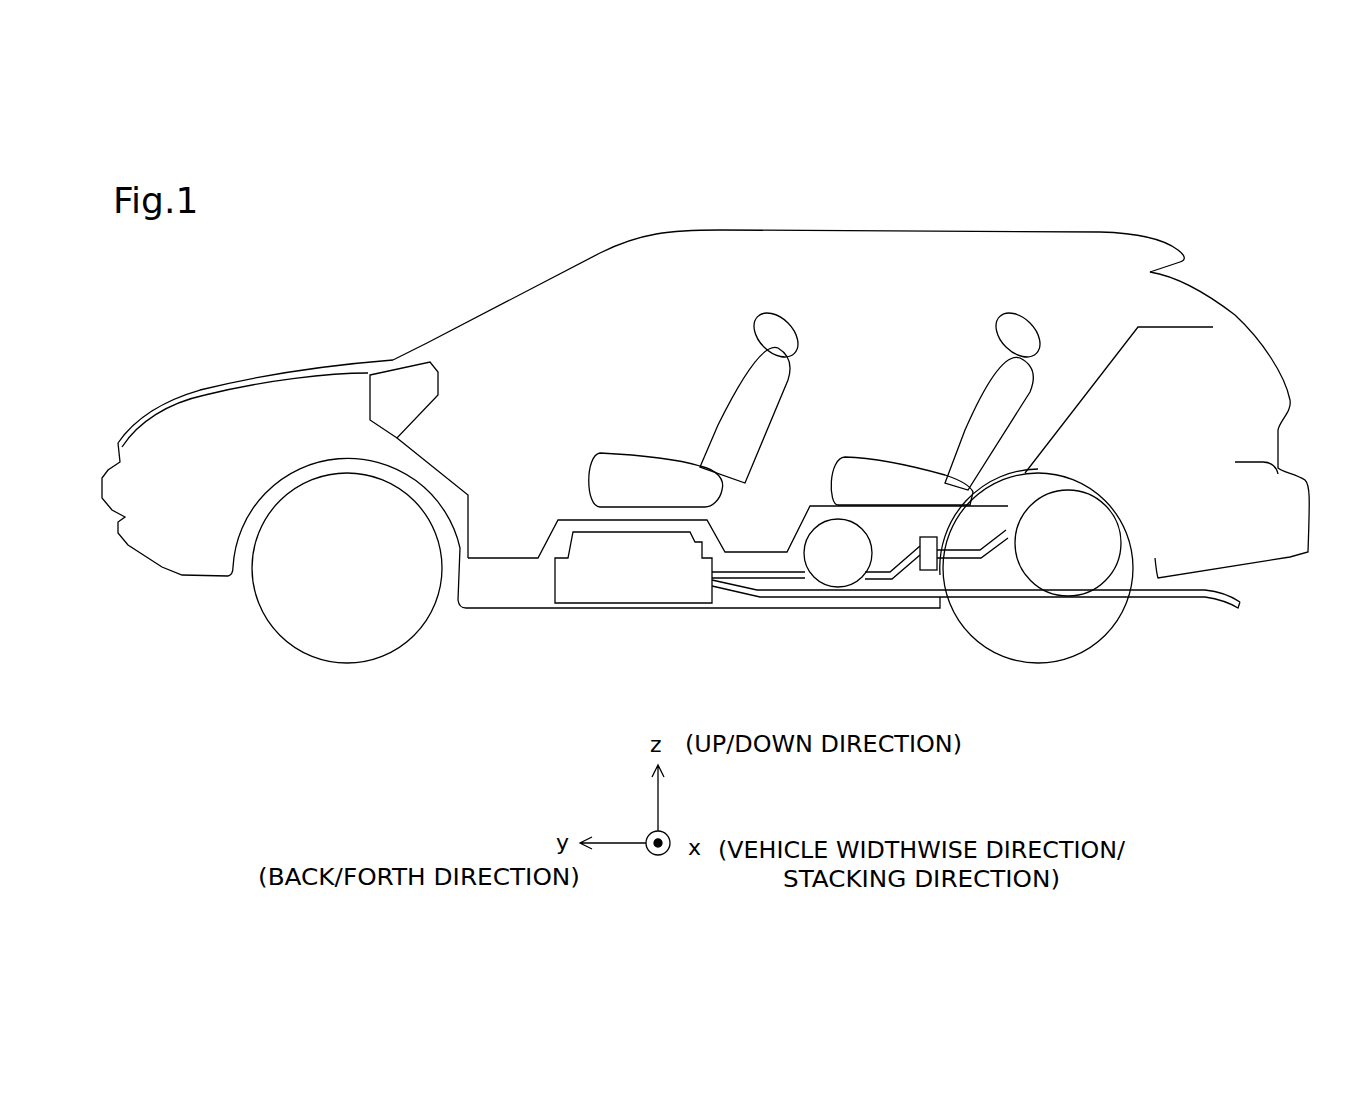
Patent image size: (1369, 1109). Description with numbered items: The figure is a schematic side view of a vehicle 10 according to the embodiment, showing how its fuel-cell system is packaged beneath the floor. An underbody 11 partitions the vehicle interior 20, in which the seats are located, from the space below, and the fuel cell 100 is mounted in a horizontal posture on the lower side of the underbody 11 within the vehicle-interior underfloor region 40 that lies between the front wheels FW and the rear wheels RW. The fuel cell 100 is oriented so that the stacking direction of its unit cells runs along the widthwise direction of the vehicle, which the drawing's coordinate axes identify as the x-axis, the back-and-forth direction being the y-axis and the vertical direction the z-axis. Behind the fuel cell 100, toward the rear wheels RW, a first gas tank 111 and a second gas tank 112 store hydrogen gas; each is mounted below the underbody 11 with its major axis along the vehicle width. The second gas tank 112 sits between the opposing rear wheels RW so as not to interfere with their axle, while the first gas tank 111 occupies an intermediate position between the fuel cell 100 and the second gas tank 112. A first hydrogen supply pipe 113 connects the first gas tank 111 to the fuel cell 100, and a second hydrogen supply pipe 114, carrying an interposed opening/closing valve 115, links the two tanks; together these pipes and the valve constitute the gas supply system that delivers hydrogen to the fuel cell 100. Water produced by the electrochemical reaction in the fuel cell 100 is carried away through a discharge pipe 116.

The vehicle 10 is at (1142, 203).
The underbody 11 is at (767, 547).
The vehicle interior 20 is at (868, 308).
The vehicle-interior underfloor region 40 is at (975, 611).
The fuel cell 100 is at (636, 588).
The first gas tank 111 is at (840, 570).
The second gas tank 112 is at (1088, 567).
The first hydrogen supply pipe 113 is at (745, 577).
The second hydrogen supply pipe 114 is at (893, 580).
The opening/closing valve 115 is at (930, 573).
The discharge pipe 116 is at (797, 590).
The front wheels FW is at (362, 665).
The rear wheels RW is at (1085, 655).